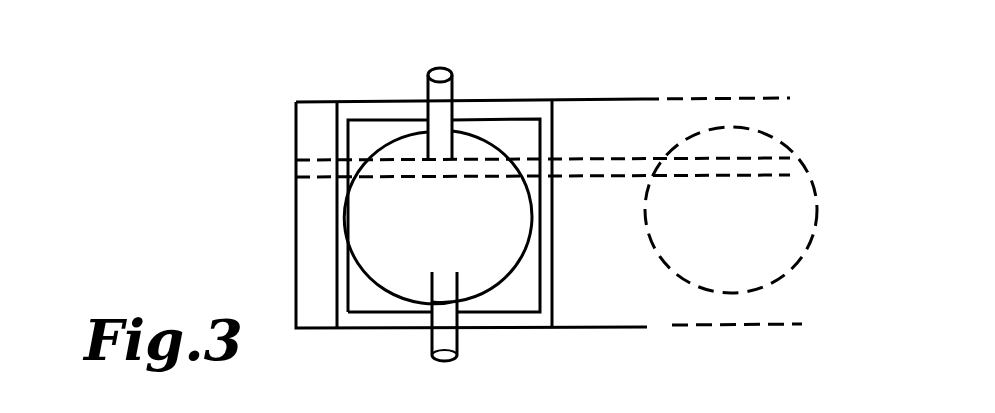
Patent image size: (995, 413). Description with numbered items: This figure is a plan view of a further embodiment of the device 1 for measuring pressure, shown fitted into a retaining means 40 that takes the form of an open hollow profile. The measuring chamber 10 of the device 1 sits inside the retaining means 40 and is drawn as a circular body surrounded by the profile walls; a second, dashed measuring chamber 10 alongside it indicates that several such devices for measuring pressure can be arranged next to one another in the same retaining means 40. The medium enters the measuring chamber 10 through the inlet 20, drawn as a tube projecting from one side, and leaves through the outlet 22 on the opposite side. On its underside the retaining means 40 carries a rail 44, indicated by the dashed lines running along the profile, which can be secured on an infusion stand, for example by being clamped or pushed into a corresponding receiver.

The device for measuring pressure 1 is at (378, 85).
The measuring chamber 10 is at (400, 262).
The inlet 20 is at (444, 98).
The outlet 22 is at (455, 345).
The retaining means 40 is at (597, 99).
The rail 44 is at (648, 159).